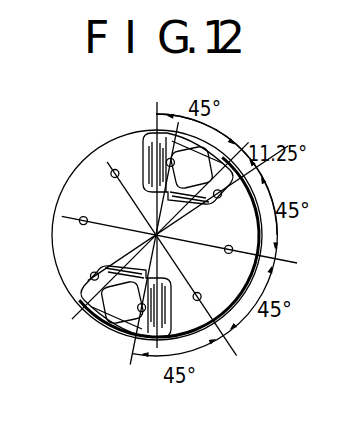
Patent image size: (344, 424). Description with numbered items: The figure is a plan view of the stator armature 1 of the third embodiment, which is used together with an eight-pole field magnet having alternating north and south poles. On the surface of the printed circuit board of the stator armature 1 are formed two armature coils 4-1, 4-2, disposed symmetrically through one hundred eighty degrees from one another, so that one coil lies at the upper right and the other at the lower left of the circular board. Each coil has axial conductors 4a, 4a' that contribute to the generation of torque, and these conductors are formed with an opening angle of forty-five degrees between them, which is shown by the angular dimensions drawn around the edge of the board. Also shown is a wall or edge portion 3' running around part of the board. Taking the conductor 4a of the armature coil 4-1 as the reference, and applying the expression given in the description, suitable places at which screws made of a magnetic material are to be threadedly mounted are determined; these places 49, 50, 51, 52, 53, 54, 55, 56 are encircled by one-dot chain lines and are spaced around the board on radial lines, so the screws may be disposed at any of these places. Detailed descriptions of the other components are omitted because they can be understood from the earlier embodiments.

The stator armature 1 is at (286, 136).
The annular wall 3' is at (204, 247).
The armature coil 4-1 is at (219, 134).
The armature coil 4-2 is at (114, 333).
The axial conductor 4a is at (161, 246).
The axial conductor 4a' is at (171, 235).
The suitable place for screw 49 is at (249, 217).
The suitable place for screw 50 is at (236, 246).
The suitable place for screw 51 is at (202, 304).
The suitable place for screw 52 is at (105, 326).
The suitable place for screw 53 is at (92, 272).
The suitable place for screw 54 is at (82, 216).
The suitable place for screw 55 is at (110, 171).
The suitable place for screw 56 is at (152, 130).